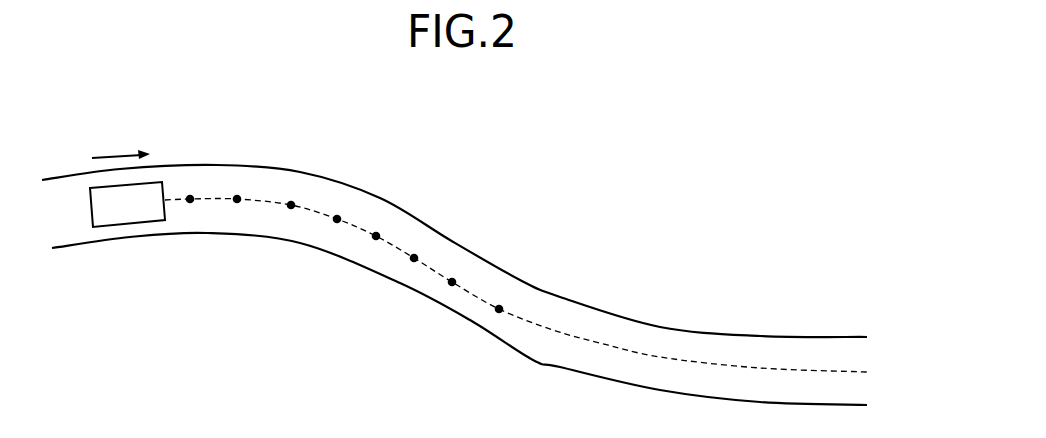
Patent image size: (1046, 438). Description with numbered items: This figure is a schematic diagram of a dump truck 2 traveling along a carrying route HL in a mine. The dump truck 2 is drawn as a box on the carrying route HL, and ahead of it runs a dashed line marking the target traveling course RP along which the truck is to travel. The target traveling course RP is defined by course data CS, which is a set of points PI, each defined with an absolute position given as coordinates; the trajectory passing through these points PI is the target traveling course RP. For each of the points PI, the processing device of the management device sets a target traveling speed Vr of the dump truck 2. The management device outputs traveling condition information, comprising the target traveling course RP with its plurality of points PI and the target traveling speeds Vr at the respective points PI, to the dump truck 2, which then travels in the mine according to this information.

The dump truck 2 is at (130, 226).
The points PI is at (190, 196).
The target traveling speeds Vr is at (192, 204).
The target traveling course RP is at (439, 260).
The course data CS is at (553, 330).
The carrying route HL is at (633, 332).